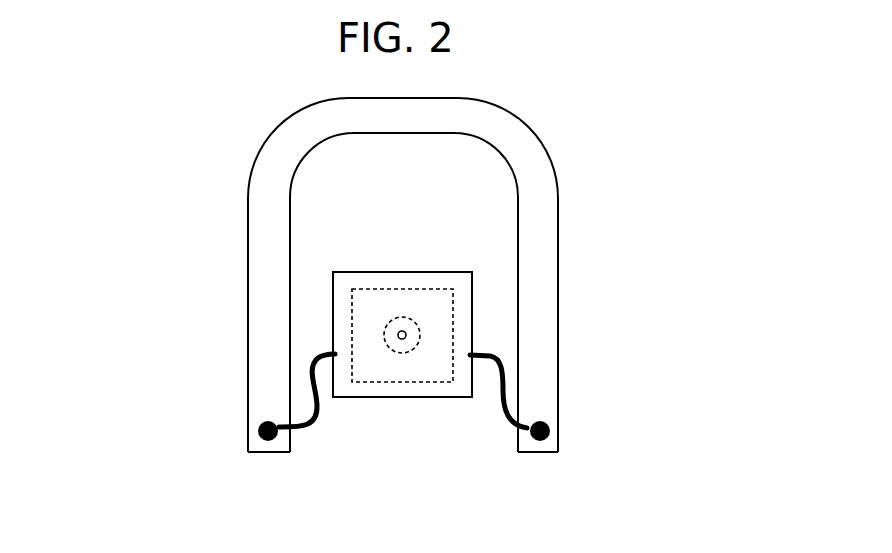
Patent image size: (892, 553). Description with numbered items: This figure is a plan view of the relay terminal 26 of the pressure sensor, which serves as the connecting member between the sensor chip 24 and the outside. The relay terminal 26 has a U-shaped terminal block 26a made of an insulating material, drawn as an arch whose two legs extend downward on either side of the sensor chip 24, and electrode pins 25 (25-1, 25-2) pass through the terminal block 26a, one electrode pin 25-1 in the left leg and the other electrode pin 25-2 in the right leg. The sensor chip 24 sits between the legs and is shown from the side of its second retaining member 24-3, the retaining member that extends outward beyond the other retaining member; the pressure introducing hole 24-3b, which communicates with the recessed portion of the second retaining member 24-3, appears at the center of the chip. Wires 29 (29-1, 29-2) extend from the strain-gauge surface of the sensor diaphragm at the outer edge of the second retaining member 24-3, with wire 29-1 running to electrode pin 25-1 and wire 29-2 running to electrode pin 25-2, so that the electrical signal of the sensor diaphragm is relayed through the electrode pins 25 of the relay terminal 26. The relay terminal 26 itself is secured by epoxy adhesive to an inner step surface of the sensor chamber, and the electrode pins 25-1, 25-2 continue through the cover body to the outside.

The sensor chip 24 is at (404, 282).
The second retaining member 24-3 is at (404, 274).
The pressure introducing hole 24-3b is at (400, 330).
The electrode pins 25 is at (394, 465).
The electrode pin 25-1 is at (257, 432).
The electrode pin 25-2 is at (550, 431).
The relay terminal 26 is at (381, 275).
The U-shaped terminal block 26a is at (550, 258).
The wires 29 is at (418, 444).
The wire 29-1 is at (318, 422).
The wire 29-2 is at (505, 412).